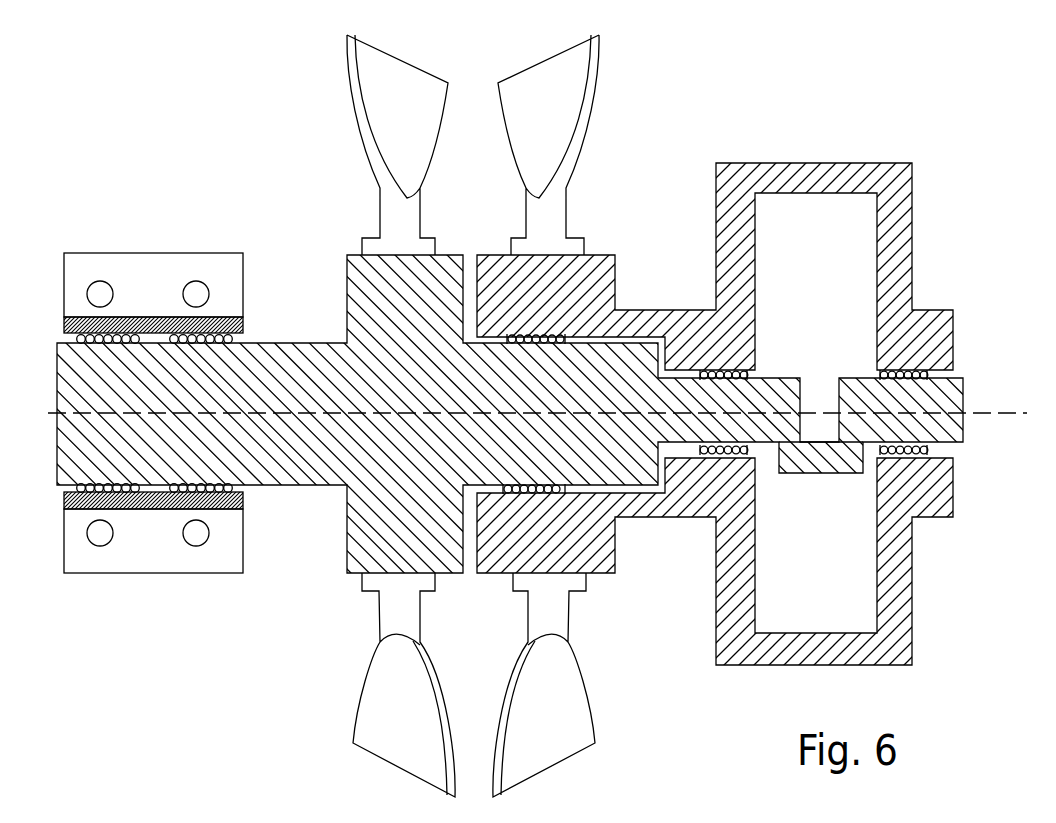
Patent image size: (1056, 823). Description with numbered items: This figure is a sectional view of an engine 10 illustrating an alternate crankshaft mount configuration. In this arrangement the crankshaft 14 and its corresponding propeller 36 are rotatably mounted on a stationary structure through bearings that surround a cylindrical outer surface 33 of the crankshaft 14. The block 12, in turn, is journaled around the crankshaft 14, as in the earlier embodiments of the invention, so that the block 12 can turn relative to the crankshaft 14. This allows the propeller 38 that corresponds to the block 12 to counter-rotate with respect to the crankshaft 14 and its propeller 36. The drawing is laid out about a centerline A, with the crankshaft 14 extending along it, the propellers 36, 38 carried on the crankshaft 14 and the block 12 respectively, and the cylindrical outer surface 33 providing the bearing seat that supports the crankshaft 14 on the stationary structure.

The engine 10 is at (828, 63).
The block 12 is at (900, 288).
The crankshaft 14 is at (942, 402).
The cylindrical outer surface 33 is at (267, 340).
The propeller 36 is at (403, 113).
The propeller 38 is at (542, 142).
The axis of rotation A is at (970, 412).